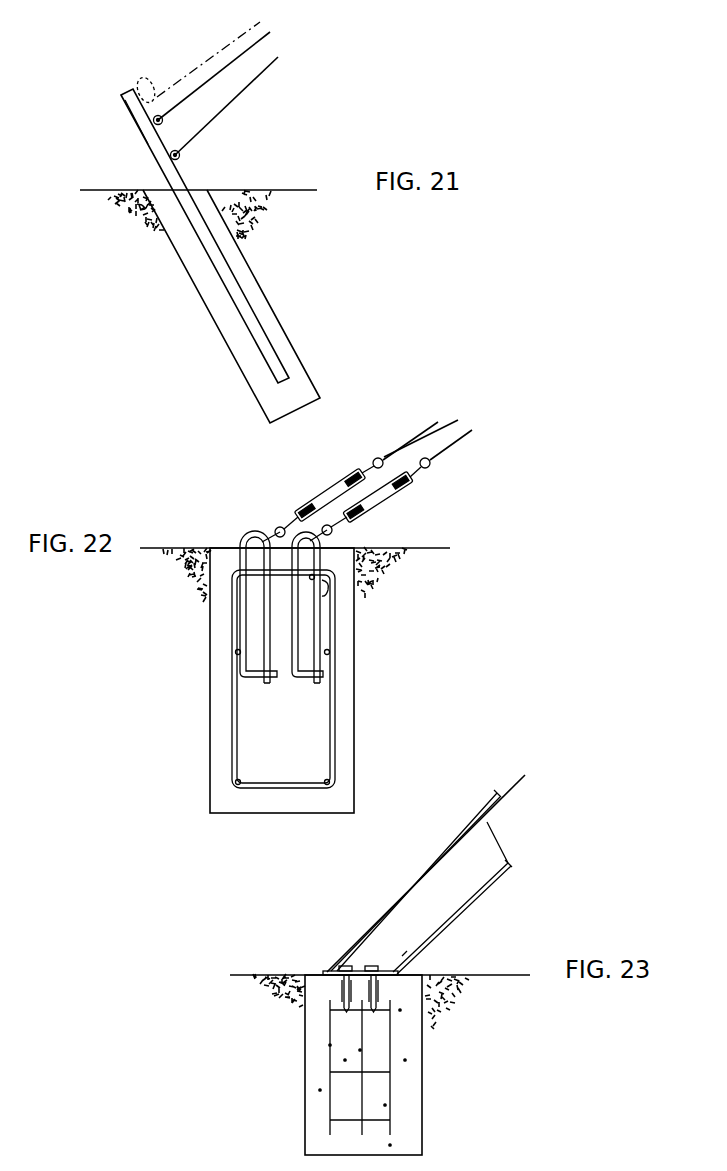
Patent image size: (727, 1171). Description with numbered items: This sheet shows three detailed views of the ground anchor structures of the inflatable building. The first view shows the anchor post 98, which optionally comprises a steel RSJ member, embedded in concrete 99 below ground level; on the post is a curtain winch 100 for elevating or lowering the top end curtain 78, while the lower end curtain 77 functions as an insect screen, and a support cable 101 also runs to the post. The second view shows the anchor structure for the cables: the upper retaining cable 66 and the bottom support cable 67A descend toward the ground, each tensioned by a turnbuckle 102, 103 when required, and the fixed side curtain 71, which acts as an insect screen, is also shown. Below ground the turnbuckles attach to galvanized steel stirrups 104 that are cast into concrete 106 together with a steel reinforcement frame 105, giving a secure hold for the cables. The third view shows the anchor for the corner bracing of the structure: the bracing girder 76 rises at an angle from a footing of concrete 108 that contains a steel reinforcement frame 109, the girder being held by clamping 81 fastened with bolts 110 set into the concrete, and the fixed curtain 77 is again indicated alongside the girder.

In FIG. 22, the cable 66 is at (420, 433).
In FIG. 22, the bottom support cable 67A is at (448, 445).
In FIG. 22, the side curtain 71 is at (458, 422).
In FIG. 23, the bracing girder 76 is at (413, 938).
In FIG. 21, the end curtain 77 is at (192, 92).
In FIG. 23, the end curtain 77 is at (523, 777).
In FIG. 21, the end curtain 78 is at (210, 55).
In FIG. 23, the clamping 81 is at (388, 912).
In FIG. 21, the anchor post 98 is at (180, 173).
In FIG. 21, the concrete 99 is at (260, 298).
In FIG. 21, the curtain winch 100 is at (137, 85).
In FIG. 21, the support cable 101 is at (258, 77).
In FIG. 22, the turnbuckle 102 is at (382, 503).
In FIG. 22, the turnbuckle 103 is at (328, 489).
In FIG. 22, the galvanized steel stirrups 104 is at (318, 620).
In FIG. 22, the steel reinforcement frame 105 is at (337, 735).
In FIG. 22, the concrete 106 is at (348, 782).
In FIG. 23, the concrete 108 is at (413, 1123).
In FIG. 23, the steel reinforcement frame 109 is at (363, 1123).
In FIG. 23, the bolts 110 is at (342, 985).